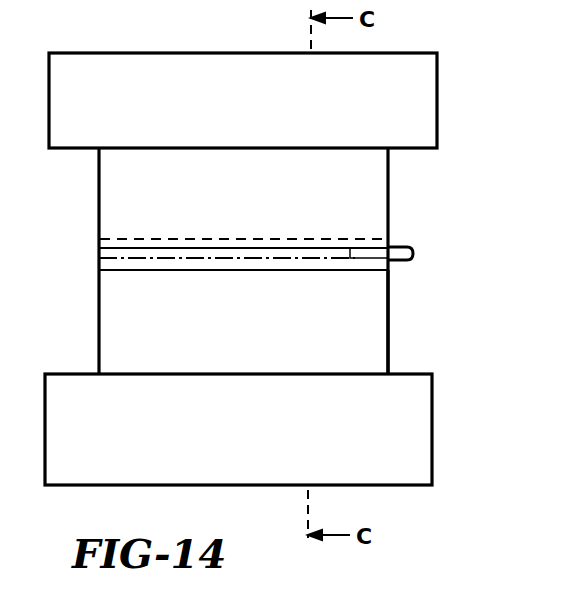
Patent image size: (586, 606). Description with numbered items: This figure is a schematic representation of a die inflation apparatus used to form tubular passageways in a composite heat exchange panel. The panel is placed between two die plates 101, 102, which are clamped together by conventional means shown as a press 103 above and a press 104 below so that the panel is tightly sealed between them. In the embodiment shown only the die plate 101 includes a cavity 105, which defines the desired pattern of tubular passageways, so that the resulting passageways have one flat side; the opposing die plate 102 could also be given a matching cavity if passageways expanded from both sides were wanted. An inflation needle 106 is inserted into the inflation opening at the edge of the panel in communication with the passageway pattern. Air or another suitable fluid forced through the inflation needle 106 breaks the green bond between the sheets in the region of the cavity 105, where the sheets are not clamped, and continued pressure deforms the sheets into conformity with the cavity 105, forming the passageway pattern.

The die plate 101 is at (390, 186).
The die plate 102 is at (385, 321).
The press 103 is at (440, 77).
The press 104 is at (433, 412).
The cavity 105 is at (392, 241).
The inflation needle 106 is at (414, 252).